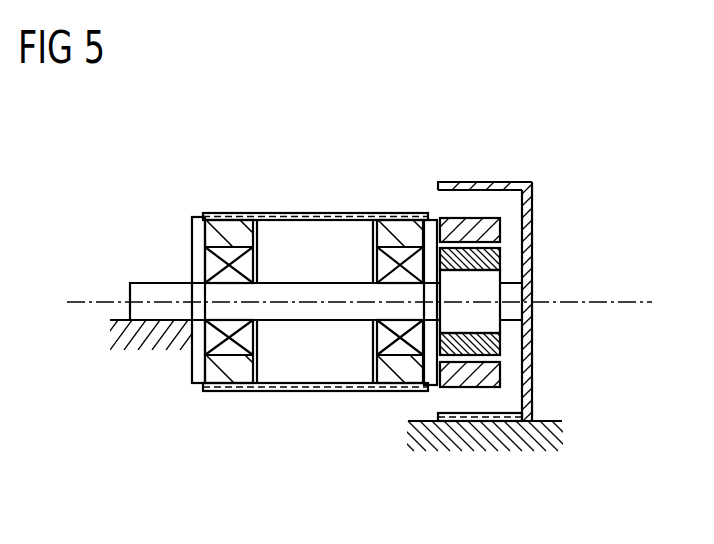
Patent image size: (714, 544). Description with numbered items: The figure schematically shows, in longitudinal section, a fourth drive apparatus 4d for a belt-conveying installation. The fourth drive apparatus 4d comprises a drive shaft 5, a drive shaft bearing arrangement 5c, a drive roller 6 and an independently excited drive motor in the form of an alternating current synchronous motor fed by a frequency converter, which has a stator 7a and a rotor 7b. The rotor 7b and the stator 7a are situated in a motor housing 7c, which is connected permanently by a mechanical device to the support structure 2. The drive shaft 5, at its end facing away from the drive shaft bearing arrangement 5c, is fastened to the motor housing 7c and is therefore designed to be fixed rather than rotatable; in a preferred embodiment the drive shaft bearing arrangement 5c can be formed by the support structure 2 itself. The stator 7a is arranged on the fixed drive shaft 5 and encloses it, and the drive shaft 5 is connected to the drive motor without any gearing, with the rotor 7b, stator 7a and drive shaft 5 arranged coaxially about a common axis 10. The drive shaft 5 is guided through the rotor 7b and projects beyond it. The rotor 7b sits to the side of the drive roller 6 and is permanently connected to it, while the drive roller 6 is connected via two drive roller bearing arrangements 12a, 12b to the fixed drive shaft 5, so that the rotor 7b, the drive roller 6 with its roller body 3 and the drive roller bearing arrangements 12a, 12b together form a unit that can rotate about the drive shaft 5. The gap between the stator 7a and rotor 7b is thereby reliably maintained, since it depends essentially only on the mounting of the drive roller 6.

The support structure 2 is at (495, 437).
The rotor 3 is at (310, 213).
The fourth drive apparatus 4d is at (206, 154).
The drive shaft 5 is at (130, 292).
The drive shaft bearing arrangement 5c is at (148, 337).
The drive roller 6 is at (400, 232).
The stator 7a is at (497, 258).
The rotor 7b is at (492, 232).
The motor housing 7c is at (496, 182).
The axis of rotation 10 is at (637, 300).
The drive roller bearing arrangement 12a is at (264, 258).
The drive roller bearing arrangement 12b is at (369, 258).